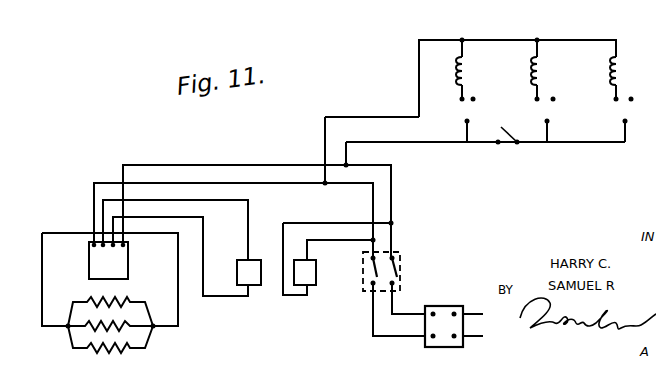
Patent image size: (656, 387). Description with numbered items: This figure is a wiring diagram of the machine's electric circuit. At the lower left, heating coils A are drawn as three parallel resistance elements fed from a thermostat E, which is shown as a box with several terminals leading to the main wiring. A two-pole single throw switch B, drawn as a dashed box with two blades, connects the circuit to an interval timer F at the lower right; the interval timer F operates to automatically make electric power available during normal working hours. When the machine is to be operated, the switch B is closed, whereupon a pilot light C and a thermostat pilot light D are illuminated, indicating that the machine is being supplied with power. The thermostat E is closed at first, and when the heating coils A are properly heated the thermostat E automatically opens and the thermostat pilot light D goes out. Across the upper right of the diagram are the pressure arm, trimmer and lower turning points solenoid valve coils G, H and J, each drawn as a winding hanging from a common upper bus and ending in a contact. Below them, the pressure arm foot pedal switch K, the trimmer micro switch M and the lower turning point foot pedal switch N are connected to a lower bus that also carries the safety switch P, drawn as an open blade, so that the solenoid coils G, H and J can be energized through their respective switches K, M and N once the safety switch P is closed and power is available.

The heating coils A is at (67, 338).
The two-pole single throw switch B is at (386, 272).
The pilot light C is at (310, 280).
The thermostat pilot light D is at (244, 268).
The thermostat E is at (108, 260).
The interval timer F is at (446, 312).
The pressure arm solenoid valve coil G is at (454, 71).
The trimmer solenoid valve coil H is at (536, 71).
The lower turning points solenoid valve coil J is at (612, 79).
The pressure arm foot pedal switch K is at (458, 126).
The trimmer micro switch M is at (537, 125).
The lower turning point foot pedal switch N is at (617, 124).
The safety switch P is at (508, 145).